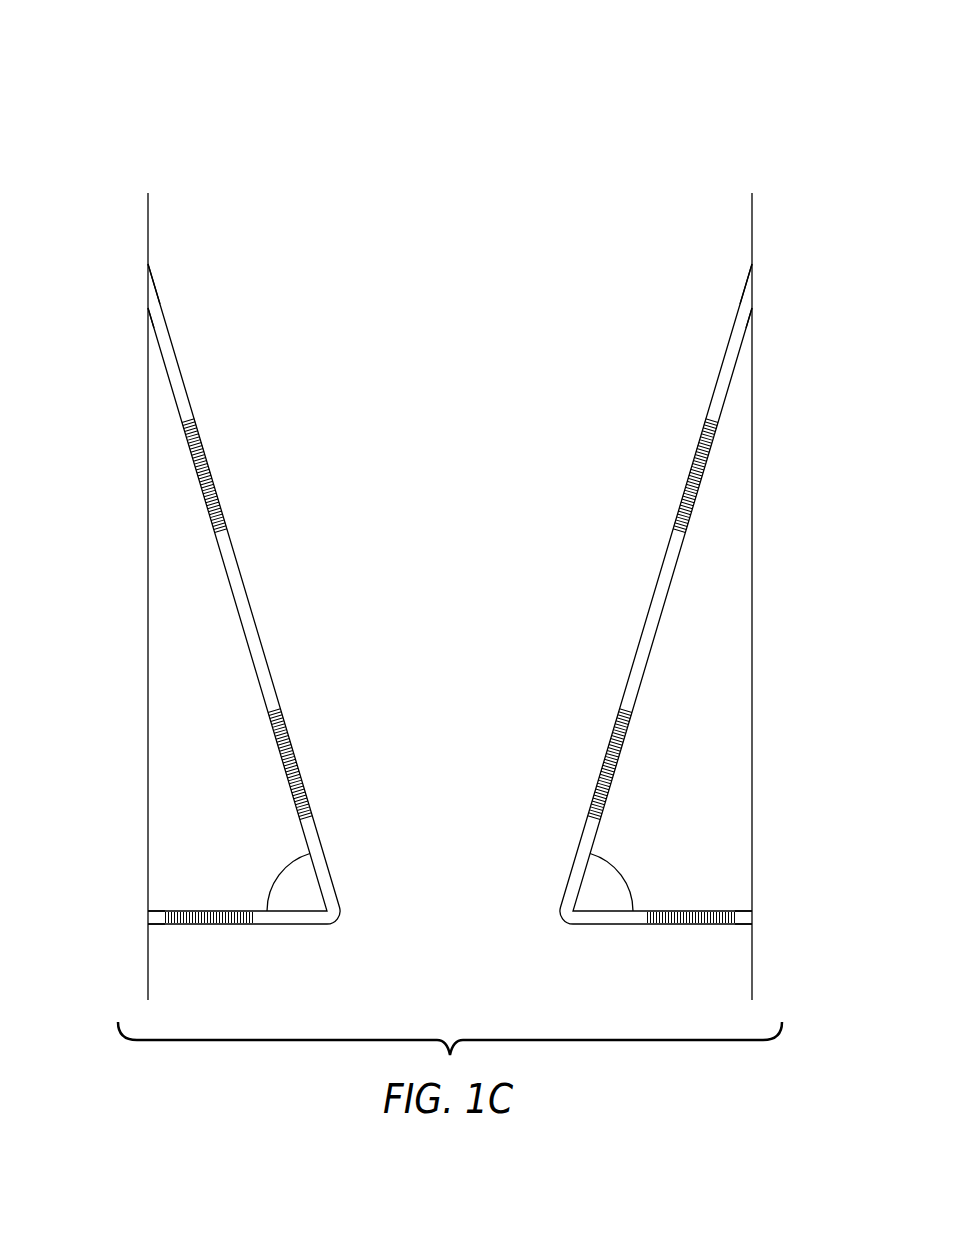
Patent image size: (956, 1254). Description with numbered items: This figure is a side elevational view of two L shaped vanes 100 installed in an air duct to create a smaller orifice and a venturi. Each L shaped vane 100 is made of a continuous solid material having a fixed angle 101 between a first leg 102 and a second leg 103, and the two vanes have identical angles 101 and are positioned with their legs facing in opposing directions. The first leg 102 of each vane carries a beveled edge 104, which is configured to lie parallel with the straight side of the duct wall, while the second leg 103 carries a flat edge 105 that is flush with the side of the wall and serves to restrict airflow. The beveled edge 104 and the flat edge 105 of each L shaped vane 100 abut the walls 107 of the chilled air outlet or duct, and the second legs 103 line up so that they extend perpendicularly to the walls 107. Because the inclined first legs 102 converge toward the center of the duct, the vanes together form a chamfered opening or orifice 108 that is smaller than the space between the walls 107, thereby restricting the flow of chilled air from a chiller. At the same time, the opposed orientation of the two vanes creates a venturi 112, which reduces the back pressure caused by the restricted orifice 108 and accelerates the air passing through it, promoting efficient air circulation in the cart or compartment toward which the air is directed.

The L shaped vane 100 is at (265, 497).
The angle 101 is at (291, 863).
The first leg 102 is at (266, 657).
The second leg 103 is at (221, 950).
The beveled edge 104 is at (148, 284).
The flat edge 105 is at (148, 918).
The walls 107 is at (115, 654).
The orifice 108 is at (455, 928).
The venturi 112 is at (308, 150).